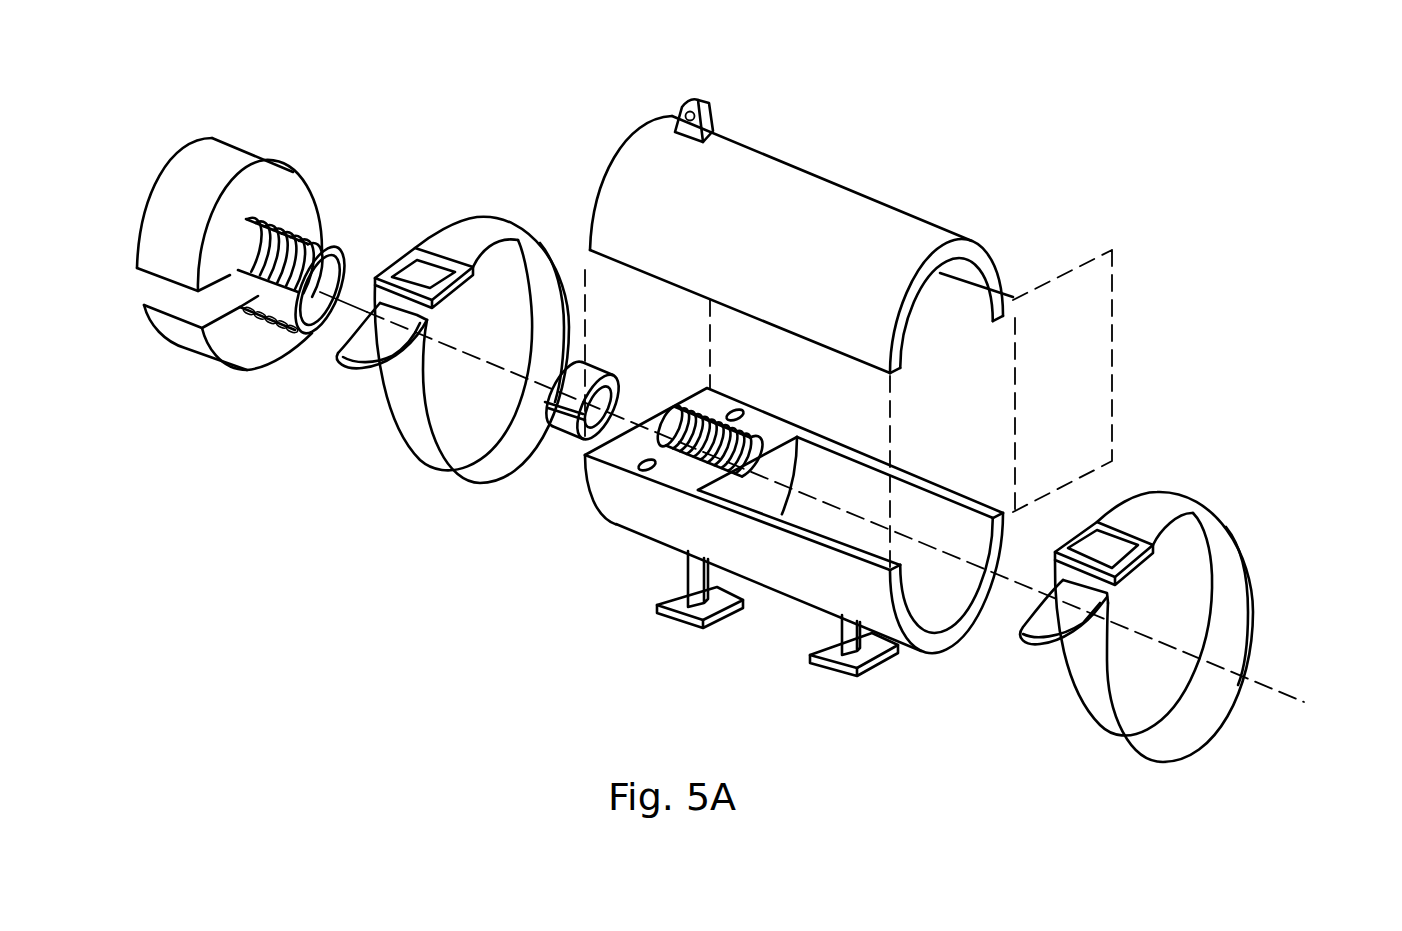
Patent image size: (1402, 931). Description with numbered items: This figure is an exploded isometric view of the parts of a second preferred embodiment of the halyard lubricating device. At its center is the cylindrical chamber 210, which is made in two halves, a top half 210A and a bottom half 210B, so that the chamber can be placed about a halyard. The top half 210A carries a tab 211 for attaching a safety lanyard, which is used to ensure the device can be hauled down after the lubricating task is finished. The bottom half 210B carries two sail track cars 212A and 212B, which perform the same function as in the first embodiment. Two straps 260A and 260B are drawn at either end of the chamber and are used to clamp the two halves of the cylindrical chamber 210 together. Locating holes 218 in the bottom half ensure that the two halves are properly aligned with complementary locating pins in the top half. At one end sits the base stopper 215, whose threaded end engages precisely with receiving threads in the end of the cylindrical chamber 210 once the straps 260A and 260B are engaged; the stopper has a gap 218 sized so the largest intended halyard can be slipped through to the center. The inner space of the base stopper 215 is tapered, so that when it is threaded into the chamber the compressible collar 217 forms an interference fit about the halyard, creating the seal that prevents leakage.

The cylindrical chamber 210 is at (1112, 358).
The top half 210A is at (755, 177).
The bottom half 210B is at (780, 575).
The tab 211 is at (707, 103).
The sail track car 212A is at (665, 603).
The sail track car 212B is at (832, 648).
The base stopper 215 is at (223, 153).
The compressible collar 217 is at (557, 420).
The locating holes 218 is at (192, 308).
The strap 260A is at (460, 230).
The strap 260B is at (1163, 510).